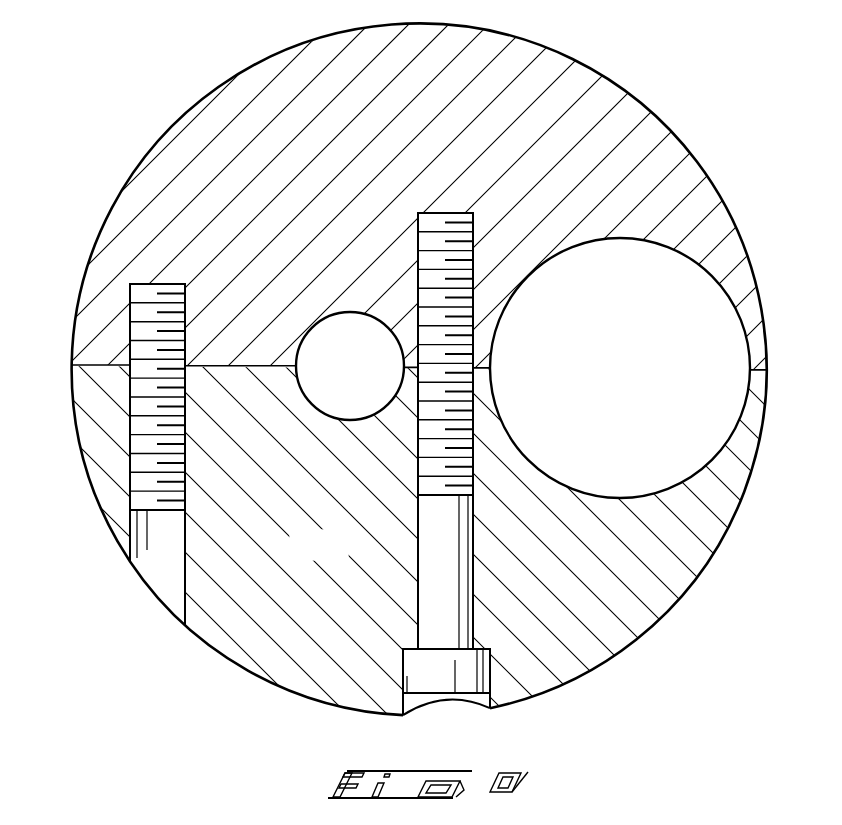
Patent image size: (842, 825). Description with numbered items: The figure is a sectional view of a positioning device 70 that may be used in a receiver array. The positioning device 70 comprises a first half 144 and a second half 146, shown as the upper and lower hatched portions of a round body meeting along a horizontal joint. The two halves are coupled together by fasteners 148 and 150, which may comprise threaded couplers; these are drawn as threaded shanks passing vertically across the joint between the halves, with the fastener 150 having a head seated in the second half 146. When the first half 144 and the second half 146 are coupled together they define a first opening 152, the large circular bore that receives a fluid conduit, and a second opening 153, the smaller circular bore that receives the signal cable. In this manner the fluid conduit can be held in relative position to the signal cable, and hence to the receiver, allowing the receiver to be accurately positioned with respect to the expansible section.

The positioning device 70 is at (654, 56).
The first half 144 is at (196, 104).
The second half 146 is at (248, 671).
The fastener 148 is at (130, 467).
The fastener 150 is at (418, 555).
The first opening 152 is at (633, 377).
The second opening 153 is at (372, 380).